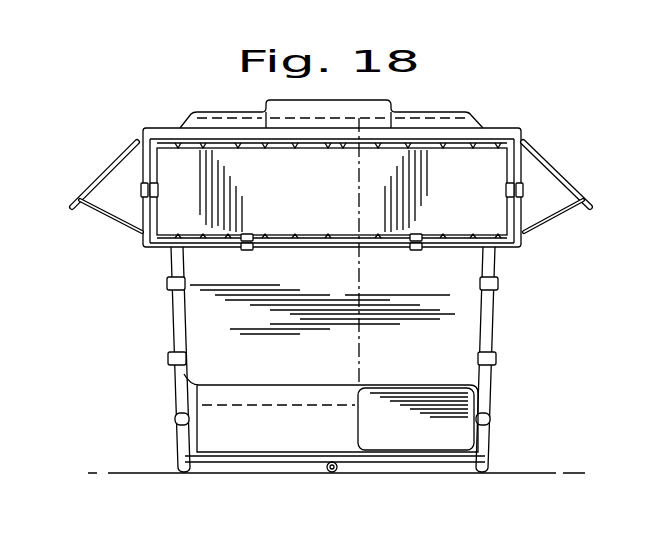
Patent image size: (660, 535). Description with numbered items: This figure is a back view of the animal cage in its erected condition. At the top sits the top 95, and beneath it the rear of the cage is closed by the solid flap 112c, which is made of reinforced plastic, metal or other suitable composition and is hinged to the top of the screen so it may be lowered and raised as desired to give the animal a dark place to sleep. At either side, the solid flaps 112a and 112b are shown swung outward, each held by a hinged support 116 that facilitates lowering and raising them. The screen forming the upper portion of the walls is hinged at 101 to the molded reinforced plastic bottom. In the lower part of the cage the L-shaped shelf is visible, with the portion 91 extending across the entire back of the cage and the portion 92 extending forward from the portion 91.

The top 95 is at (217, 107).
The solid flap 112a is at (555, 167).
The solid flap 112b is at (109, 166).
The rear flap 112c is at (332, 189).
The hinged supports 116 is at (112, 220).
The hinge 101 is at (415, 251).
The shelf portion 92 is at (331, 413).
The shelf portion 91 is at (416, 419).